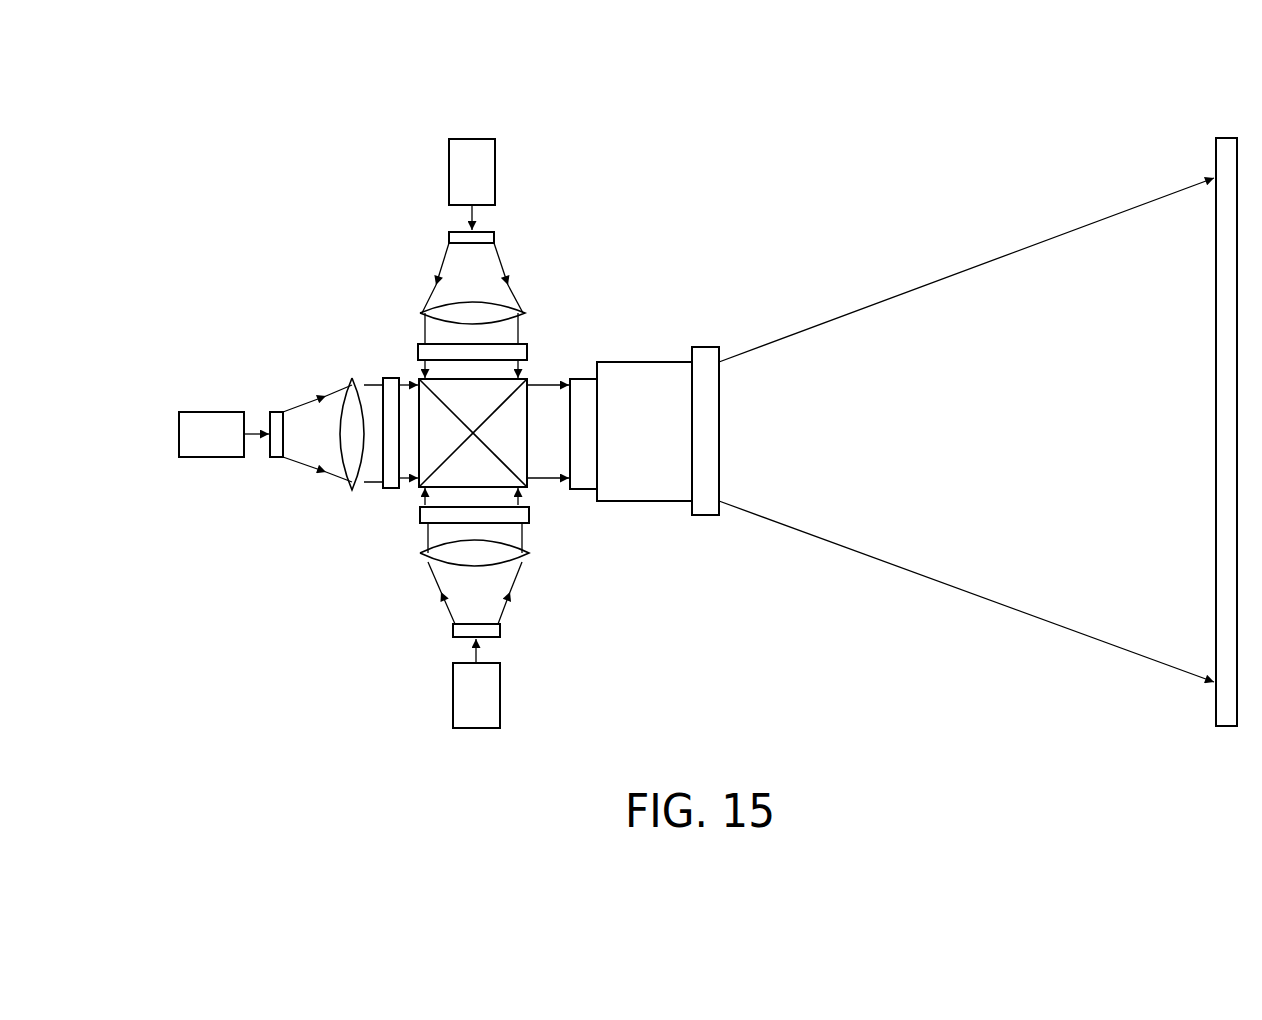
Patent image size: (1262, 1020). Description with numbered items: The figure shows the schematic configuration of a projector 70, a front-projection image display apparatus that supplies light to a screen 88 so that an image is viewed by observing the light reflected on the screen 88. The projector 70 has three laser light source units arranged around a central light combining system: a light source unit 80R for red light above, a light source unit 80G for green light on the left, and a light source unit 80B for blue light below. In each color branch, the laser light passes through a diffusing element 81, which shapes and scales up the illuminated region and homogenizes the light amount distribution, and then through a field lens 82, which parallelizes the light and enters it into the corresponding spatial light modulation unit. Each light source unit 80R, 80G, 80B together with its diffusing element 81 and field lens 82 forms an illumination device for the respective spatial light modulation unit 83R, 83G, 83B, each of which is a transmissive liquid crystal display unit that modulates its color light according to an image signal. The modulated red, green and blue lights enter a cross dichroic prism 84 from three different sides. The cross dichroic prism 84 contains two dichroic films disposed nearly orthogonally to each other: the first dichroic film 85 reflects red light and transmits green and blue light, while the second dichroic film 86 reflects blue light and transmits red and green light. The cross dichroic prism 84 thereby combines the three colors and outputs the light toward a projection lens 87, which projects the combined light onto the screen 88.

The projector 70 is at (320, 104).
The light source unit for R light 80R is at (484, 158).
The light source unit for G light 80G is at (197, 415).
The light source unit for B light 80B is at (460, 700).
The diffusing element 81 is at (494, 237).
The field lens 82 is at (522, 312).
The spatial light modulation unit for R light 83R is at (527, 349).
The spatial light modulation unit for G light 83G is at (392, 378).
The spatial light modulation unit for B light 83B is at (423, 513).
The cross dichroic prism 84 is at (410, 494).
The first dichroic film 85 is at (500, 460).
The second dichroic film 86 is at (500, 406).
The projection lens 87 is at (704, 357).
The screen 88 is at (1227, 143).